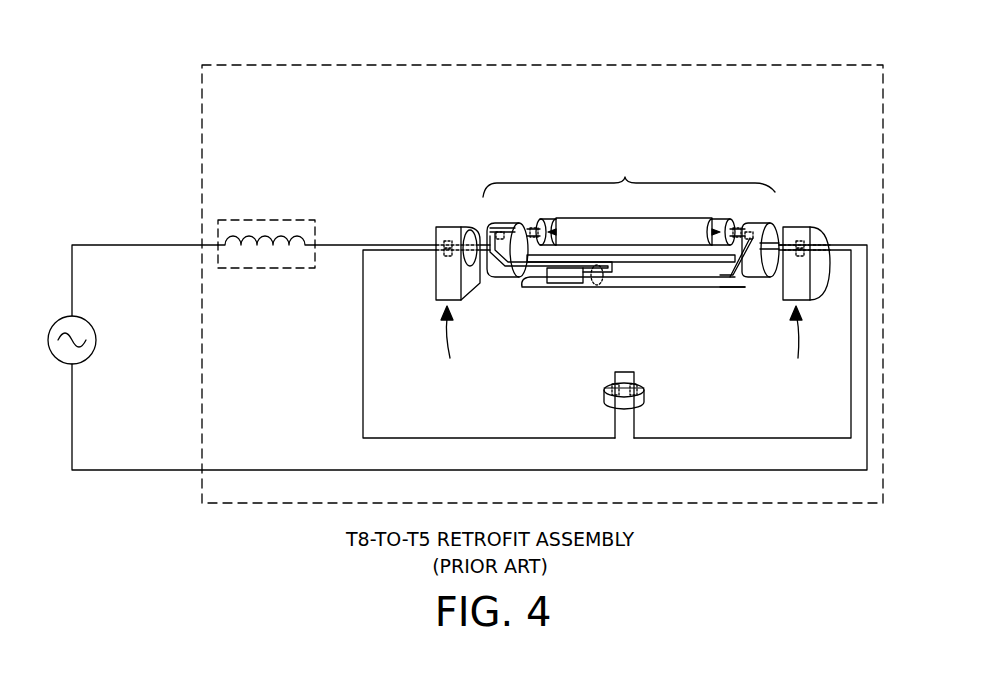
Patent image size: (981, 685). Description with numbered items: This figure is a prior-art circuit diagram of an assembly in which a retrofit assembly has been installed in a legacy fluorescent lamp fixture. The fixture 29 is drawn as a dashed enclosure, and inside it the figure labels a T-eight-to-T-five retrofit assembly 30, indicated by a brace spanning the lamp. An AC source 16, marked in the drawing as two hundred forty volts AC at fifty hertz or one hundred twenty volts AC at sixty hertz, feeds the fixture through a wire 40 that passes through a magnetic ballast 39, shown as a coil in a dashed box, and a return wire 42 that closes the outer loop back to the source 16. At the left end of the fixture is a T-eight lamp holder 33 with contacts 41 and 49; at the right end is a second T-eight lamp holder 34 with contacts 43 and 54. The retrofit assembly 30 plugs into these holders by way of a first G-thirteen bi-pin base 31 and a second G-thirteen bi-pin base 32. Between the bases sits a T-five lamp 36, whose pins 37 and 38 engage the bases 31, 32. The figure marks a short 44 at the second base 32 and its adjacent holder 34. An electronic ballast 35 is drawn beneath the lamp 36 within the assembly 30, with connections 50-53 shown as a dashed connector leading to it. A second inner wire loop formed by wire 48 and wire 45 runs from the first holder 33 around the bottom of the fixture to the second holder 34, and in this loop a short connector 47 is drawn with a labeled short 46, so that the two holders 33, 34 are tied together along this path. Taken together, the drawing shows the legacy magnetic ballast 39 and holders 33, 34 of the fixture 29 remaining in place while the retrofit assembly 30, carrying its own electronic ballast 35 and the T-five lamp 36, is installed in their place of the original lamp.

The AC power source 16 is at (92, 356).
The fixture 29 is at (702, 65).
The T8-to-T5 retrofit assembly 30 is at (625, 177).
The G13 bi-pin base 31 is at (498, 228).
The G13 bi-pin base 32 is at (758, 228).
The T8 lamp holder 33 is at (456, 227).
The T8 lamp holder 34 is at (812, 227).
The electronic ballast 35 is at (563, 278).
The T5 lamp 36 is at (626, 217).
The lamp pin 37 is at (534, 220).
The lamp pin 38 is at (735, 220).
The magnetic ballast 39 is at (268, 268).
The wire 40 is at (358, 245).
The lamp holder contact 41 is at (445, 243).
The wire 42 is at (267, 470).
The lamp holder contact 43 is at (805, 247).
The short 44 is at (781, 227).
The wire 45 is at (724, 438).
The short 46 is at (645, 375).
The short connector 47 is at (604, 398).
The wire 48 is at (529, 438).
The lamp holder contact 49 is at (446, 253).
The ballast connections 50-53 is at (608, 285).
The lamp holder contact 54 is at (800, 258).